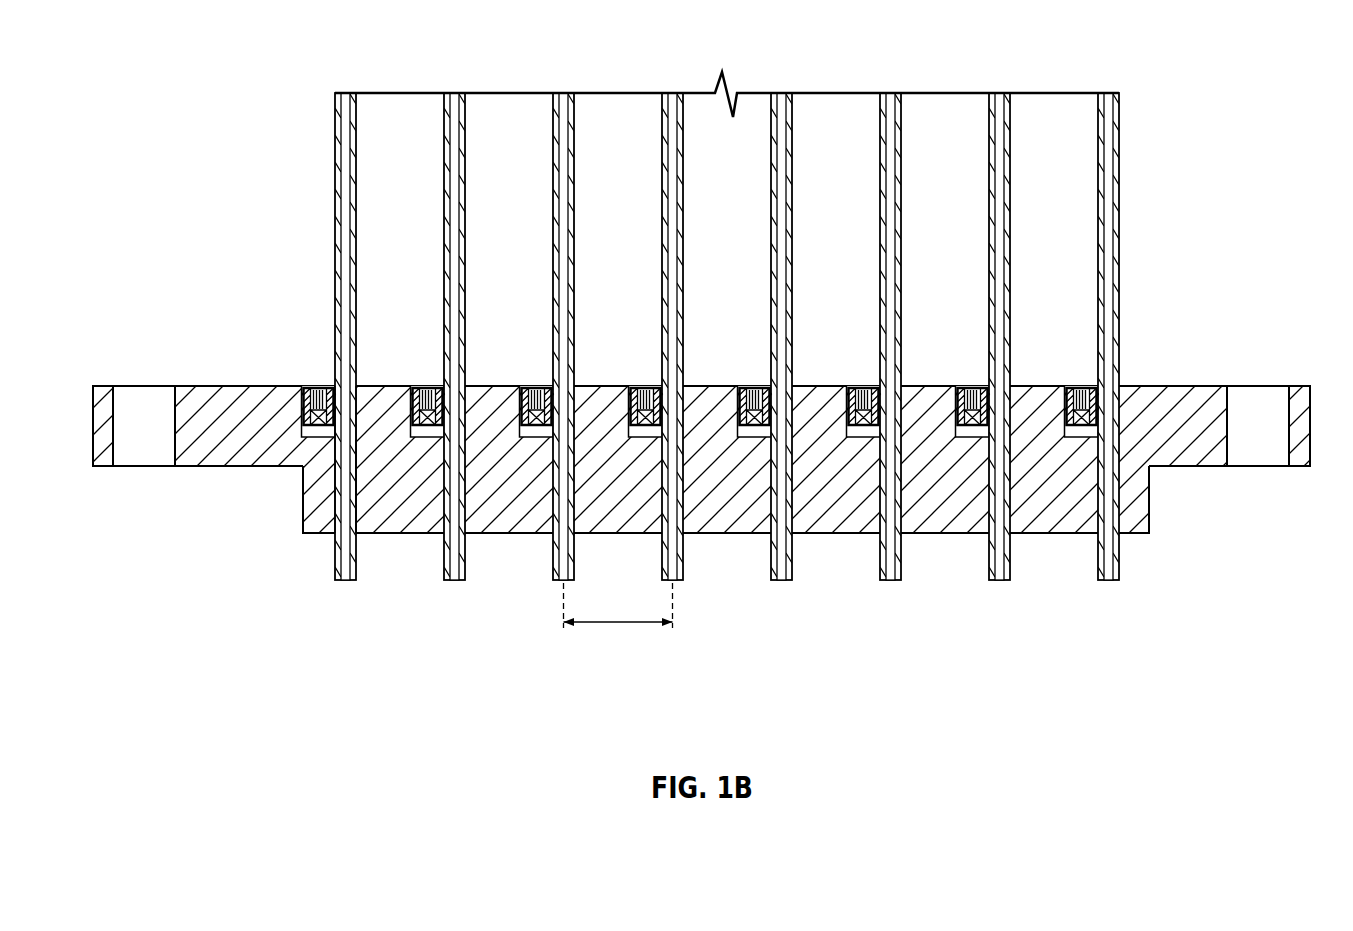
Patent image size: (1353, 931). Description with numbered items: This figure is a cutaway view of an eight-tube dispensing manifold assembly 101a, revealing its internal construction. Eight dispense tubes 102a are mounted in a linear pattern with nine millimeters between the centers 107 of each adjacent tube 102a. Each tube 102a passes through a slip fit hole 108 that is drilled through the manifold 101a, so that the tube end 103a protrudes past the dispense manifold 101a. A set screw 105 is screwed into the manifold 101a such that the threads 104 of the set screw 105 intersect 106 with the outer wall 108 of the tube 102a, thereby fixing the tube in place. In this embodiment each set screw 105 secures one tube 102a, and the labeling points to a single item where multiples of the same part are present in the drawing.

The dispense manifold 101a is at (240, 398).
The dispense tube 102a is at (465, 190).
The tube end 103a is at (333, 537).
The threads 104 is at (343, 440).
The set screw 105 is at (320, 388).
The intersection 106 is at (343, 440).
The center spacing 107 is at (620, 627).
The slip fit hole 108 is at (467, 402).